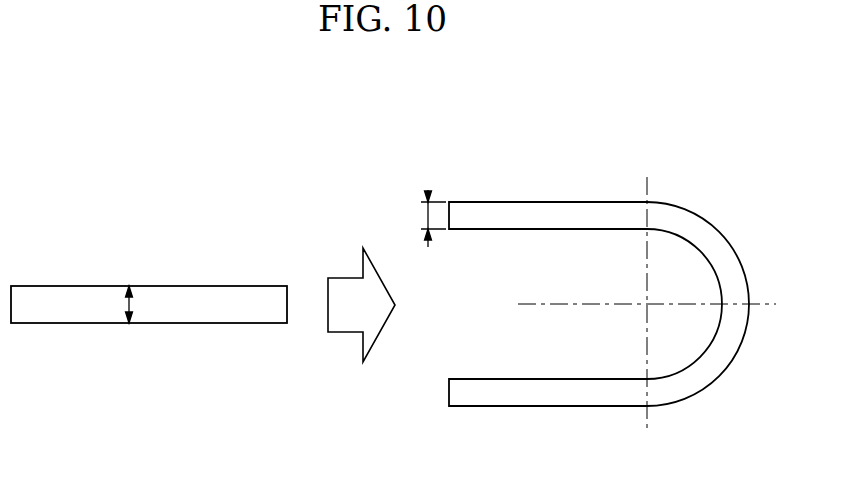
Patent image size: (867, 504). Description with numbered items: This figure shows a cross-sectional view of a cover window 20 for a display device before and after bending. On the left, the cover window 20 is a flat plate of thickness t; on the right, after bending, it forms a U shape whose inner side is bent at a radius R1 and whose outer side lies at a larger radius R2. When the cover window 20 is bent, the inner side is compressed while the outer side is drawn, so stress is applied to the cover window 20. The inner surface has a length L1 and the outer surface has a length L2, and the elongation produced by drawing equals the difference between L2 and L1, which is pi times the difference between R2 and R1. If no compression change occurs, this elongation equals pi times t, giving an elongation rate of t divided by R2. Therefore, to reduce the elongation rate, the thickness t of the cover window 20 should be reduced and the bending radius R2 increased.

The cover window 20 is at (72, 311).
The thickness t is at (286, 256).
The bending radius R1 is at (710, 267).
The bending radius R2 is at (702, 390).
The length L1 is at (672, 232).
The length L2 is at (722, 228).